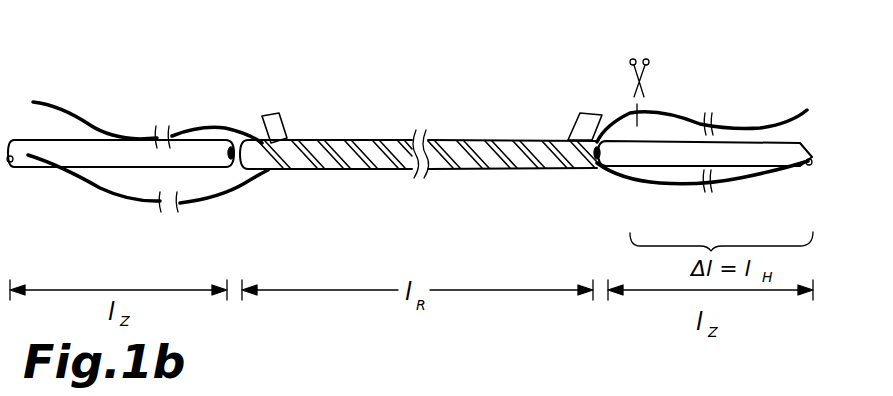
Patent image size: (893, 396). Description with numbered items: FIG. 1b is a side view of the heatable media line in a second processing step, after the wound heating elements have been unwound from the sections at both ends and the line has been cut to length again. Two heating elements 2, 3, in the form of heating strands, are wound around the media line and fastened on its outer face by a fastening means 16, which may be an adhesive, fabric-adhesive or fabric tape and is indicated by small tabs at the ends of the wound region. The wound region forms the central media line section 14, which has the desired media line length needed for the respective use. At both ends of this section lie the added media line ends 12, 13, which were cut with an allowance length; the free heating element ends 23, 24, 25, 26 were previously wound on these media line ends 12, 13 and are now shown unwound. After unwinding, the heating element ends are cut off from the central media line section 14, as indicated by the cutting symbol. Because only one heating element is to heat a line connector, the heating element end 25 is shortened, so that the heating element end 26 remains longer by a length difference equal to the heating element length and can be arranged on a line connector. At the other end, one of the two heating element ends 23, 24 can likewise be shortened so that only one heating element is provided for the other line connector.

The first heating element 2 is at (191, 131).
The second heating element 3 is at (110, 193).
The media line end 12 is at (108, 155).
The media line end 13 is at (673, 153).
The central media line section 14 is at (378, 153).
The fastening means 16 is at (271, 116).
The heating element end 23 is at (43, 100).
The heating element end 24 is at (63, 173).
The heating element end 25 is at (768, 127).
The heating element end 26 is at (650, 183).